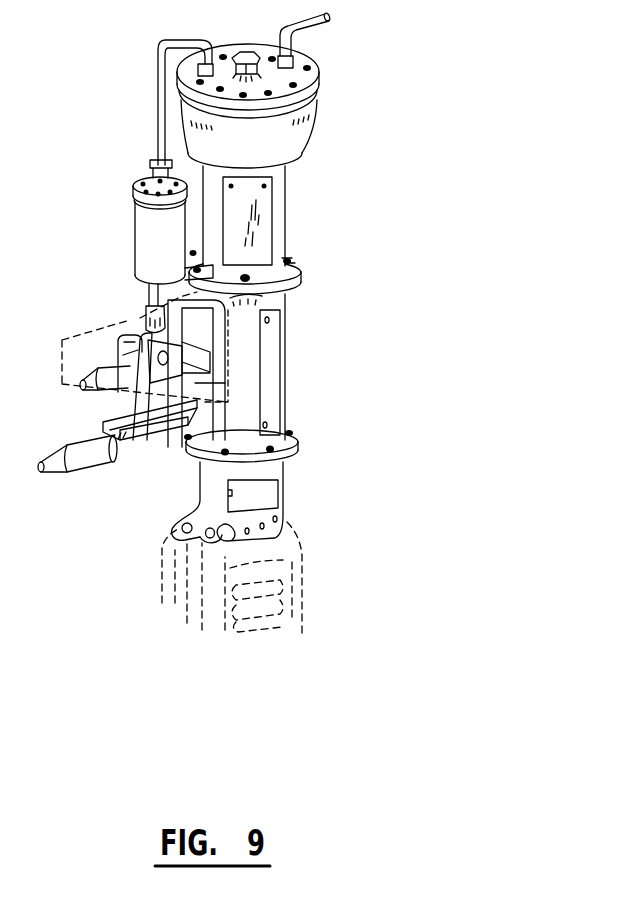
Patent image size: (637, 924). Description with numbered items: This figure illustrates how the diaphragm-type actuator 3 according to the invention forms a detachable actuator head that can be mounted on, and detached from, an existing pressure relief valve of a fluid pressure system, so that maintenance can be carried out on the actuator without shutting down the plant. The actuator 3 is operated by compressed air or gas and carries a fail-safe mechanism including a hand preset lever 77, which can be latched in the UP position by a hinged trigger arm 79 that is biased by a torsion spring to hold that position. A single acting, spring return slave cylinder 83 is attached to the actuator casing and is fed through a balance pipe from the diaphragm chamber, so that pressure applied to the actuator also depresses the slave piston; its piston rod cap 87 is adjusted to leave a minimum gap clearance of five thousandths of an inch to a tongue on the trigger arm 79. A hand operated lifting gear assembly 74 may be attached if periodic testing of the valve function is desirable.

The diaphragm-type actuator 3 is at (292, 148).
The hand operated lifting gear assembly 74 is at (170, 612).
The hand preset lever 77 is at (87, 476).
The trigger arm 79 is at (138, 403).
The slave cylinder 83 is at (124, 233).
The piston rod cap 87 is at (150, 318).